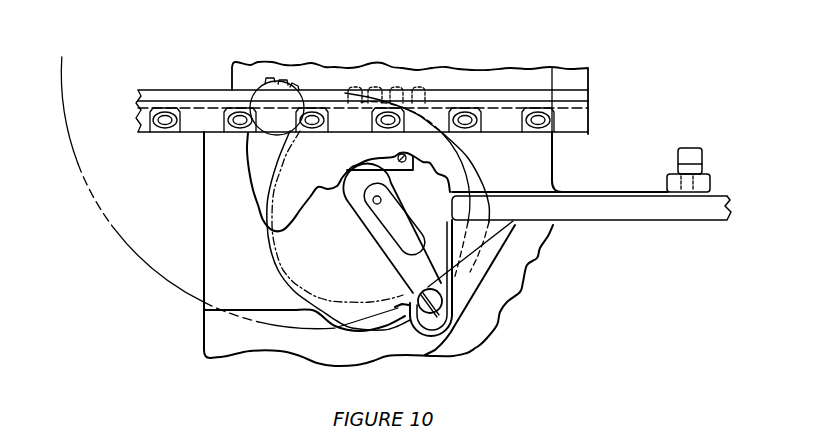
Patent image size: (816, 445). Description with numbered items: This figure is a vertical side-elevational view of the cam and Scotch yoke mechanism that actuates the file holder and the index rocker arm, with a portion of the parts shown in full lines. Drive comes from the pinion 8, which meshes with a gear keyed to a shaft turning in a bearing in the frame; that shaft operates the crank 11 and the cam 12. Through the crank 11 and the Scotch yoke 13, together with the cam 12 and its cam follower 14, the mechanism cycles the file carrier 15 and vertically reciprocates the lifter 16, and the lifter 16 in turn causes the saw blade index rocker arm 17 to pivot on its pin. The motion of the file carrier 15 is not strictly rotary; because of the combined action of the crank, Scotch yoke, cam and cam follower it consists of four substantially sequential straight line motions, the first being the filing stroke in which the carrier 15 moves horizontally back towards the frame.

The pinion 8 is at (275, 81).
The crank 11 is at (408, 270).
The cam 12 is at (362, 225).
The Scotch yoke 13 is at (425, 335).
The cam follower 14 is at (409, 163).
The file carrier 15 is at (635, 212).
The lifter 16 is at (672, 178).
The saw blade index rocker arm 17 is at (694, 153).